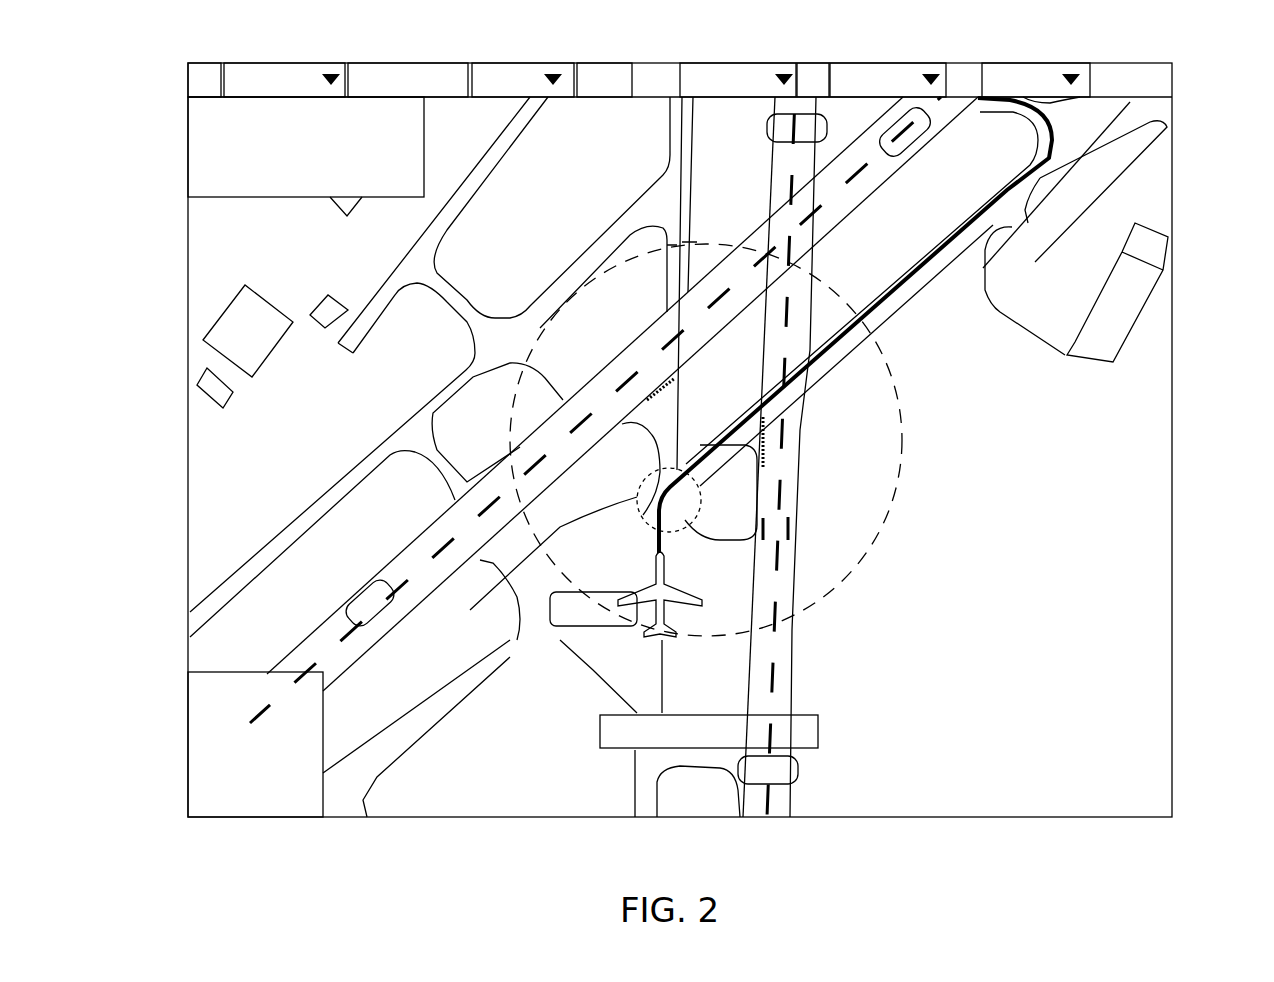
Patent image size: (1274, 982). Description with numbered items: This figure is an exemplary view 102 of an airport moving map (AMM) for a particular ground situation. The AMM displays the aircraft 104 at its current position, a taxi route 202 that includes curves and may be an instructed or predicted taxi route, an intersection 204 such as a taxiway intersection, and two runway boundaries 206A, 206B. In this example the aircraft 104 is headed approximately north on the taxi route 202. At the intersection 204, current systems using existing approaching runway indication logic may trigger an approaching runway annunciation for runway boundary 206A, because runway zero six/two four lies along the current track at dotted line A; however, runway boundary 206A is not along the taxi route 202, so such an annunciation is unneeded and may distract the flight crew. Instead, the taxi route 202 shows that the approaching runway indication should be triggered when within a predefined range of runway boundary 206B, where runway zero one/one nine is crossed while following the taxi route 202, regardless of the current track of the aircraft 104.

The view of the AMM 102 is at (164, 44).
The aircraft 104 is at (645, 612).
The taxi route 202 is at (1057, 128).
The intersection 204 is at (640, 508).
The runway boundary 206A is at (650, 384).
The runway boundary 206B is at (768, 440).